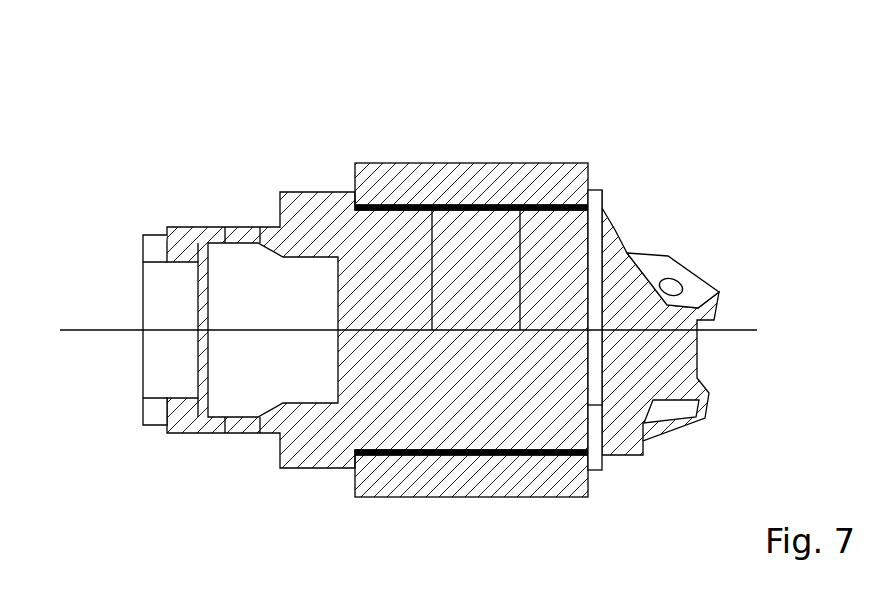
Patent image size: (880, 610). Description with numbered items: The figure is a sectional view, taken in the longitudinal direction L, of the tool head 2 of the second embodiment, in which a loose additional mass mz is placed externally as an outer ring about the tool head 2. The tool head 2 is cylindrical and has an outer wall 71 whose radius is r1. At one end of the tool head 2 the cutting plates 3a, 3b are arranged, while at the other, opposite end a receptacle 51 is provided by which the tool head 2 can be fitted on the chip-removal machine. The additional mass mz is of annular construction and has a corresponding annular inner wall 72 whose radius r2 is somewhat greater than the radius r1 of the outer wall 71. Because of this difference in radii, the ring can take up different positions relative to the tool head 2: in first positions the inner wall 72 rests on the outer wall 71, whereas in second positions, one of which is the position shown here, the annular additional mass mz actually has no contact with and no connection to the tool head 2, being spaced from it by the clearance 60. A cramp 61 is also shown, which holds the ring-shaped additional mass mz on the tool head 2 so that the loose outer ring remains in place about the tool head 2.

The tool head 2 is at (317, 230).
The receptacle 51 is at (168, 315).
The outer wall 71 is at (407, 205).
The inner wall 72 is at (447, 205).
The additional mass mz is at (500, 190).
The clearance 60 is at (522, 455).
The cramp 61 is at (598, 190).
The cutting plate 3a is at (680, 262).
The cutting plate 3b is at (706, 396).
The radius r1 is at (449, 270).
The corresponding radius r2 is at (538, 270).
The longitudinal direction L is at (422, 327).